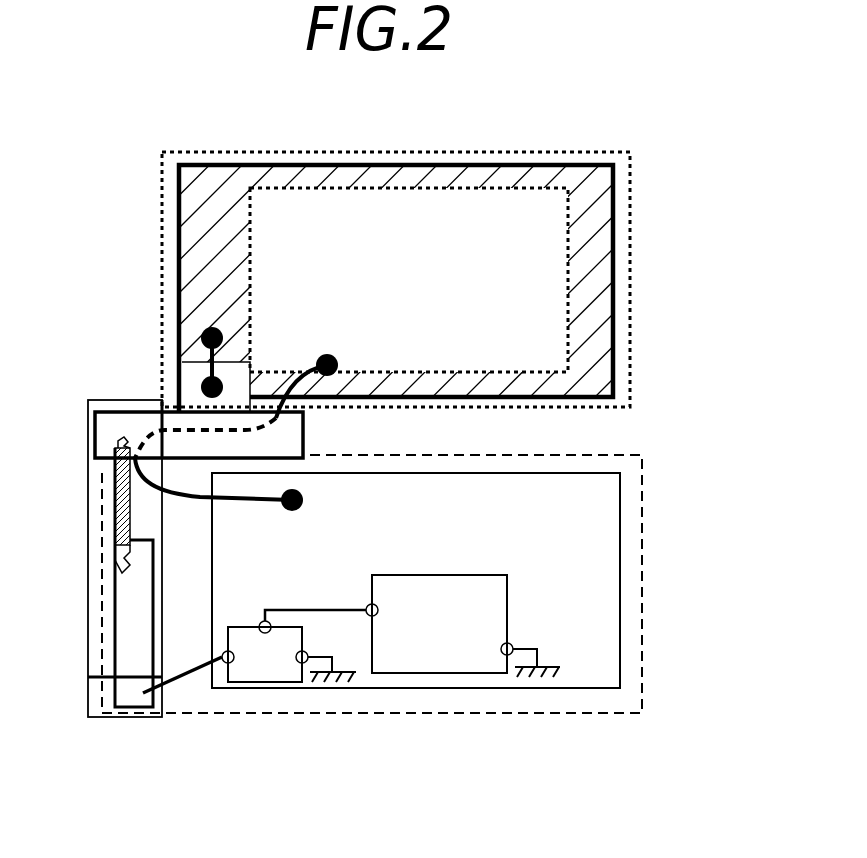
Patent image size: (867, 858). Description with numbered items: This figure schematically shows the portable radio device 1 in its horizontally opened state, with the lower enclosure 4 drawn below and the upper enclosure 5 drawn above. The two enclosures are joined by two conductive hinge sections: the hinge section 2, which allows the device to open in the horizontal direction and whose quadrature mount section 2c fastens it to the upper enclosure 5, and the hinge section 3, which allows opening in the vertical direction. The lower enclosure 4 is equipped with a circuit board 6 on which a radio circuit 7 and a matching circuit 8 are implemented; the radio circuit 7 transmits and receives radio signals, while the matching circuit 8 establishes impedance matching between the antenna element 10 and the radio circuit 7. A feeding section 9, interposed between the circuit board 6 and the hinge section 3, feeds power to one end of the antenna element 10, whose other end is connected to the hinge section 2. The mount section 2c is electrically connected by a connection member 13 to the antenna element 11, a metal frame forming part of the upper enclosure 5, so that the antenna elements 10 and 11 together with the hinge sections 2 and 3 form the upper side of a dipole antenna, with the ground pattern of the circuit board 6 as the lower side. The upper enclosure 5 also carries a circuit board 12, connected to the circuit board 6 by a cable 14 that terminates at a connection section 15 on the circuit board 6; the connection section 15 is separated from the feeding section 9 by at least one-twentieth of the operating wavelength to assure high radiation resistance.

The portable radio device 1 is at (588, 142).
The hinge section 2 is at (130, 418).
The mount section 2c is at (190, 377).
The hinge section 3 is at (130, 625).
The lower enclosure 4 is at (642, 478).
The upper enclosure 5 is at (633, 247).
The circuit board 6 is at (620, 620).
The radio circuit 7 is at (443, 667).
The matching circuit 8 is at (268, 672).
The feeding section 9 is at (178, 680).
The antenna element 10 is at (113, 474).
The antenna element 11 is at (203, 200).
The circuit board 12 is at (597, 325).
The connection member 13 is at (212, 355).
The cable 14 is at (267, 497).
The connection section 15 is at (292, 500).